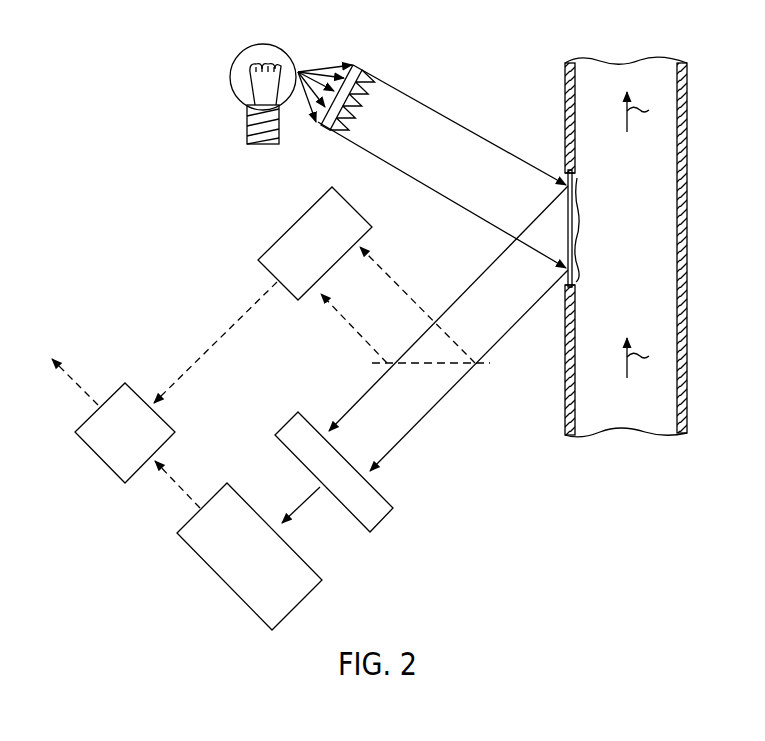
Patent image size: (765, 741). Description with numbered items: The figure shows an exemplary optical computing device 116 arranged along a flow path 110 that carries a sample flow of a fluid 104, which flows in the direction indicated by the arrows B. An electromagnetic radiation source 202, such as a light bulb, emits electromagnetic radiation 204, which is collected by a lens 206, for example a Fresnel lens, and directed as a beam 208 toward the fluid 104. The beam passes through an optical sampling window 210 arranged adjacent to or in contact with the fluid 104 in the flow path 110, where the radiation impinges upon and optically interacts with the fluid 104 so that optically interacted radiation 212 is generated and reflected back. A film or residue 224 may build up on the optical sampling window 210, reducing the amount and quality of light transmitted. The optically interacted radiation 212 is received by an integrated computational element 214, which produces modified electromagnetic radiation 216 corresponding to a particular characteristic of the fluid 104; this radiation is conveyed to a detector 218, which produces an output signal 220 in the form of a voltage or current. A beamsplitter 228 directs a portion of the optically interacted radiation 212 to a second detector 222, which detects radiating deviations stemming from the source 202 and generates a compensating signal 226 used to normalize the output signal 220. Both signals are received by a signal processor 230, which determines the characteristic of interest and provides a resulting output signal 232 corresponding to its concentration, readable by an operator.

The fluid 104 is at (647, 248).
The flow path 110 is at (687, 112).
The optical computing device 116 is at (160, 209).
The electromagnetic radiation source 202 is at (231, 68).
The electromagnetic radiation 204 is at (322, 67).
The lens 206 is at (365, 65).
The beam 208 is at (418, 104).
The optical sampling window 210 is at (577, 180).
The optically interacted radiation 212 is at (401, 443).
The integrated computational element 214 is at (380, 518).
The modified electromagnetic radiation 216 is at (309, 497).
The detector 218 is at (298, 602).
The output signal 220 is at (180, 486).
The second detector 222 is at (306, 214).
The film or residue 224 is at (576, 275).
The compensating signal 226 is at (217, 340).
The beamsplitter 228 is at (413, 365).
The signal processor 230 is at (92, 450).
The resulting output signal 232 is at (74, 380).